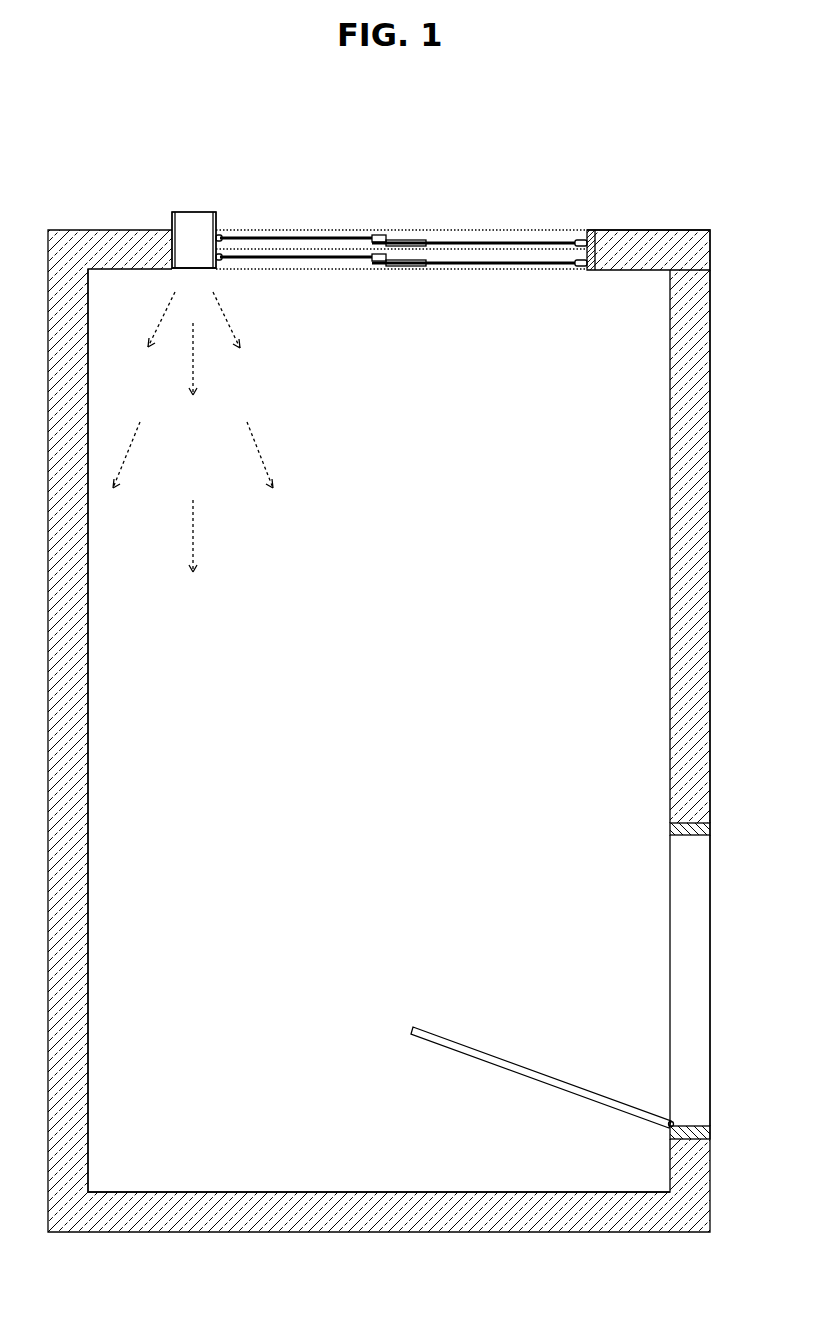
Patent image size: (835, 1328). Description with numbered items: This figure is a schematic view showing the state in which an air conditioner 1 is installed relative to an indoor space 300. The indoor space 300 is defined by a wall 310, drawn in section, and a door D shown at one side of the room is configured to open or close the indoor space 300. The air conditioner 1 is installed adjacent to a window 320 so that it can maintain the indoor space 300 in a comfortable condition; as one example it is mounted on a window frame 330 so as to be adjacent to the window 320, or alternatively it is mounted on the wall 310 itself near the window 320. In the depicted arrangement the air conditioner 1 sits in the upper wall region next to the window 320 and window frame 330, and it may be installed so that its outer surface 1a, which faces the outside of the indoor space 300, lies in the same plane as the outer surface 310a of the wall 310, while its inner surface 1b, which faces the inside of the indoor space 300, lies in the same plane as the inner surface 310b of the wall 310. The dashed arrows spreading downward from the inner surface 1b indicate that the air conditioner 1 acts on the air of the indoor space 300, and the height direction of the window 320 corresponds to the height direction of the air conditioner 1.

The air conditioner 1 is at (163, 203).
The outer surface 1a is at (203, 212).
The inner surface 1b is at (216, 269).
The indoor space 300 is at (411, 759).
The wall 310 is at (645, 654).
The outer surface of the wall 310a is at (633, 230).
The inner surface of the wall 310b is at (615, 270).
The window 320 is at (470, 269).
The window frame 330 is at (467, 238).
The door D is at (475, 1056).